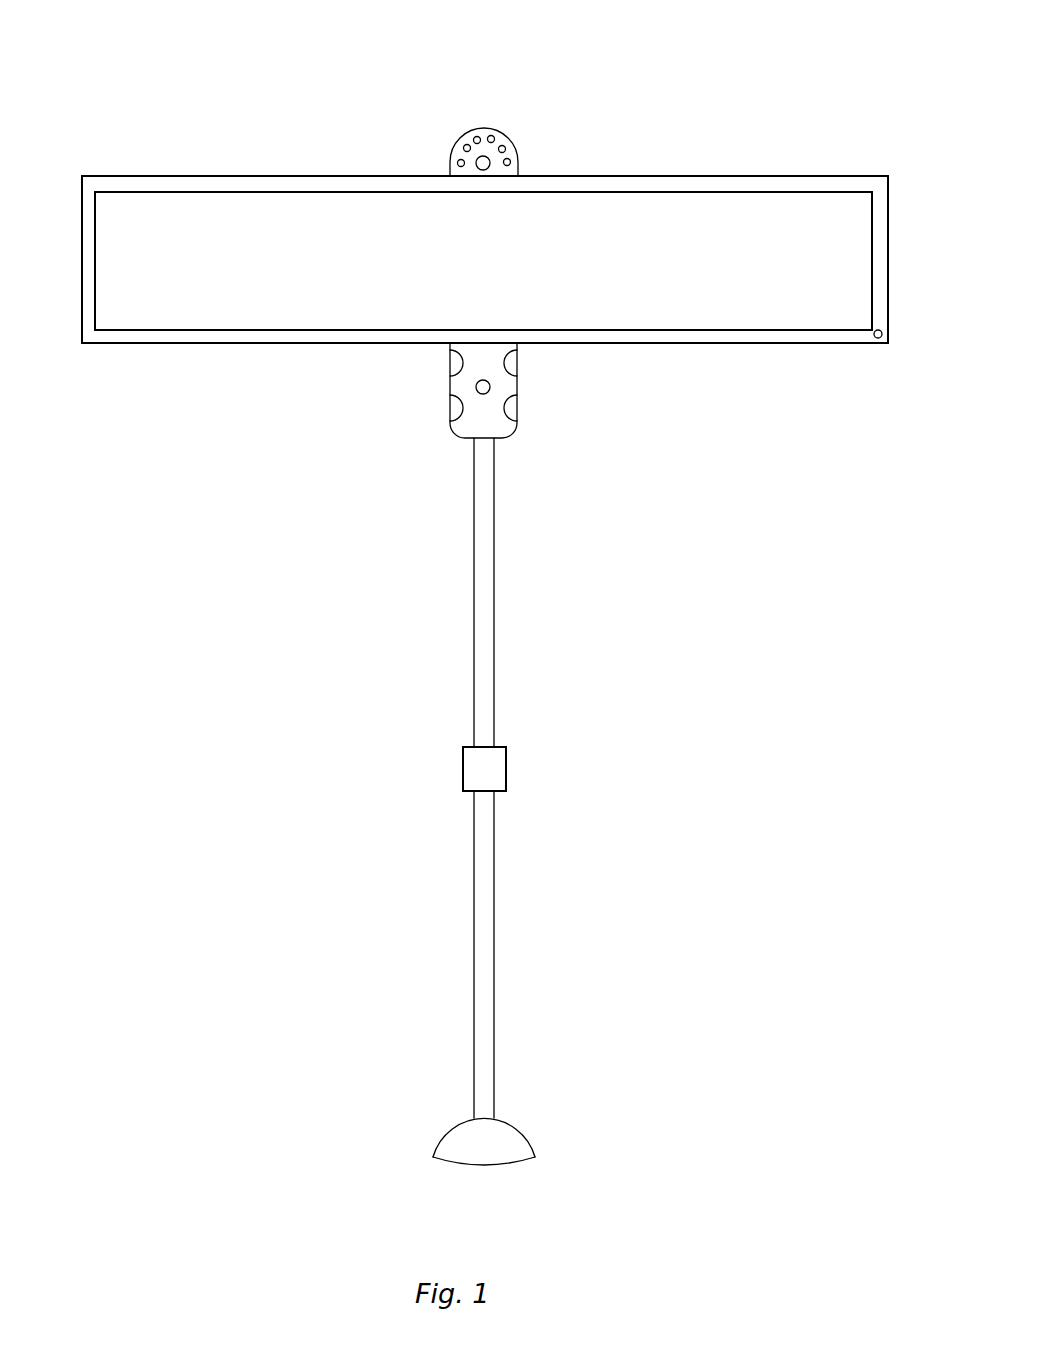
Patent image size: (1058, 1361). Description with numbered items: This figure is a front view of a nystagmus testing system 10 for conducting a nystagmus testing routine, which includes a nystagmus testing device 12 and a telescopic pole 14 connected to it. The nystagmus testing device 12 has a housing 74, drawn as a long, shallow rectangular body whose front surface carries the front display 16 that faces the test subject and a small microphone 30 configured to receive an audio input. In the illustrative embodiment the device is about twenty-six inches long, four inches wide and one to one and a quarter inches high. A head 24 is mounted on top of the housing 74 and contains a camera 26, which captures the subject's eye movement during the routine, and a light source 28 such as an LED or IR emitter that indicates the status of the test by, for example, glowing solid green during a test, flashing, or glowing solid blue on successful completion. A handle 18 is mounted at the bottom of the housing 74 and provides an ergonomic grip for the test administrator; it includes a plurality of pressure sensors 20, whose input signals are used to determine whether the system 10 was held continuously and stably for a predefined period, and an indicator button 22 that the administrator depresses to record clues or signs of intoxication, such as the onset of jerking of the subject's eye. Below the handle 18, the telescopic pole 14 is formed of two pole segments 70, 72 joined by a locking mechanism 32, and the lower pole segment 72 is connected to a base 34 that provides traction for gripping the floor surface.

The nystagmus testing system 10 is at (127, 89).
The nystagmus testing device 12 is at (915, 176).
The telescopic pole 14 is at (536, 622).
The front display 16 is at (726, 312).
The handle 18 is at (450, 390).
The pressure sensors 20 is at (512, 363).
The indicator button 22 is at (490, 388).
The head 24 is at (474, 128).
The camera 26 is at (478, 159).
The light source 28 is at (511, 141).
The microphone 30 is at (882, 334).
The locking mechanism 32 is at (492, 771).
The base 34 is at (500, 1157).
The pole segment 70 is at (485, 602).
The lower pole segment 72 is at (485, 902).
The housing 74 is at (888, 258).